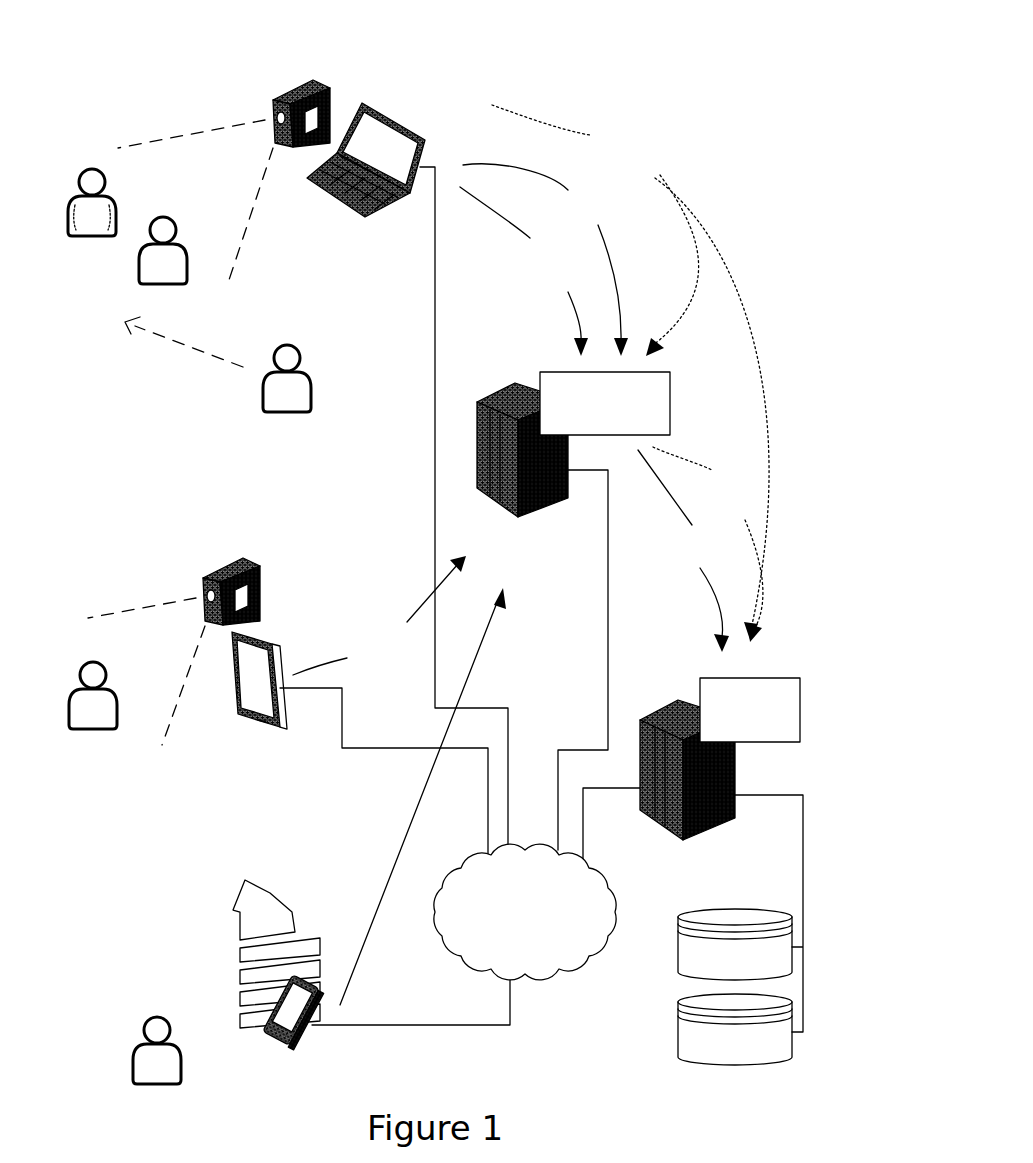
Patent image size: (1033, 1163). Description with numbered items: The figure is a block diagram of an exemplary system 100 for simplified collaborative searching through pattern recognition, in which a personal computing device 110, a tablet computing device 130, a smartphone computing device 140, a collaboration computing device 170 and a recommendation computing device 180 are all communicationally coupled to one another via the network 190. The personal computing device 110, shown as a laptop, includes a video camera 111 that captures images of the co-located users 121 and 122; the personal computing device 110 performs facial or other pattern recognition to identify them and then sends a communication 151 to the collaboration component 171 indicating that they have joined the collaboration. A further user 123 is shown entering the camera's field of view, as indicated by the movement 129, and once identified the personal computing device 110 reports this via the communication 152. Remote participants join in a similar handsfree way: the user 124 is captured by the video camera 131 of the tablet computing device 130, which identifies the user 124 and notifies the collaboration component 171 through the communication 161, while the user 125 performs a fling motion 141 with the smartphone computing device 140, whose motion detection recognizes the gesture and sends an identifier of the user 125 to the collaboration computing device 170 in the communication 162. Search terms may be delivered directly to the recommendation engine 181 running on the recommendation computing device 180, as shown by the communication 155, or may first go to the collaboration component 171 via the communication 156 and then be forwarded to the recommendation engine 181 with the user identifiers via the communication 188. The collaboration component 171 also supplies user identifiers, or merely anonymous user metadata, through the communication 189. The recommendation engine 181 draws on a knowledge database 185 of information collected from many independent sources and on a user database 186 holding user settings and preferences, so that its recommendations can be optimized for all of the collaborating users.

The system 100 is at (178, 54).
The personal computing device 110 is at (420, 128).
The video camera 111 is at (308, 80).
The user 121 is at (108, 190).
The user 122 is at (182, 232).
The user 123 is at (303, 362).
The user 124 is at (108, 686).
The user 125 is at (142, 1038).
The movement 129 is at (157, 336).
The tablet computing device 130 is at (266, 640).
The video camera 131 is at (236, 560).
The smartphone computing device 140 is at (270, 1003).
The motion 141 is at (262, 884).
The communication 151 is at (487, 165).
The communication 152 is at (482, 202).
The communication 155 is at (742, 257).
The communication 156 is at (690, 279).
The communication 161 is at (407, 620).
The communication 162 is at (405, 900).
The collaboration computing device 170 is at (478, 445).
The collaboration component 171 is at (672, 385).
The recommendation computing device 180 is at (645, 757).
The recommendation engine 181 is at (742, 678).
The knowledge database 185 is at (718, 932).
The user database 186 is at (718, 1017).
The communication 188 is at (690, 455).
The communication 189 is at (678, 488).
The network 190 is at (508, 887).